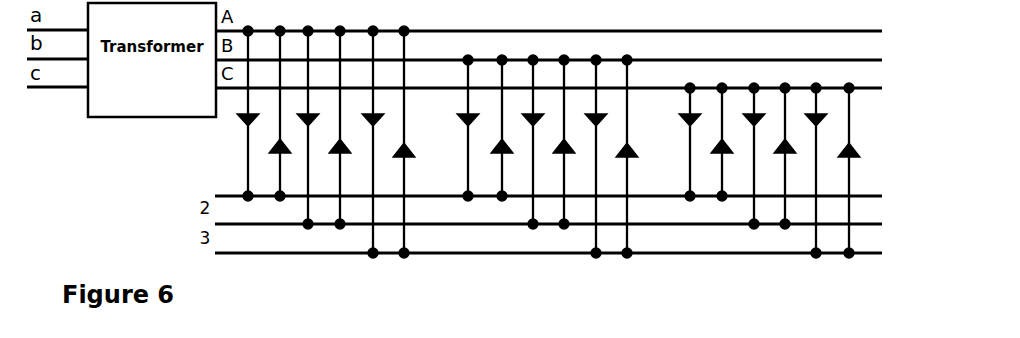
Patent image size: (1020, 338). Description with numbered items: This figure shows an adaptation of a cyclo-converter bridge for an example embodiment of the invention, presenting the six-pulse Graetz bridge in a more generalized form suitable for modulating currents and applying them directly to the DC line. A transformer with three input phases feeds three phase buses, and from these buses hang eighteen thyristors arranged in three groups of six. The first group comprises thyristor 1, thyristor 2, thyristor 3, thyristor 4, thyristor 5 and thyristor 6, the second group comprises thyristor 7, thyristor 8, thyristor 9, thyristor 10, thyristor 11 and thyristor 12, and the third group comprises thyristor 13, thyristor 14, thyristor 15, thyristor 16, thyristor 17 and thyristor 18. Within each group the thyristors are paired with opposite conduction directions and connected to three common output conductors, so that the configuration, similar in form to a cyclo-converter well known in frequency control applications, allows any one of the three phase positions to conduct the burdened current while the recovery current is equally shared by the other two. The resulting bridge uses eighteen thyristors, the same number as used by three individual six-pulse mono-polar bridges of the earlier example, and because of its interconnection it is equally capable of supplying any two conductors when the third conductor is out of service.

The thyristor 1 is at (229, 113).
The thyristor 2 is at (278, 113).
The thyristor 3 is at (308, 127).
The thyristor 4 is at (339, 127).
The thyristor 5 is at (372, 142).
The thyristor 6 is at (403, 142).
The thyristor 7 is at (467, 128).
The thyristor 8 is at (500, 128).
The thyristor 9 is at (531, 142).
The thyristor 10 is at (558, 142).
The thyristor 11 is at (590, 156).
The thyristor 12 is at (621, 156).
The thyristor 13 is at (684, 142).
The thyristor 14 is at (715, 142).
The thyristor 15 is at (748, 156).
The thyristor 16 is at (779, 156).
The thyristor 17 is at (810, 170).
The thyristor 18 is at (843, 170).